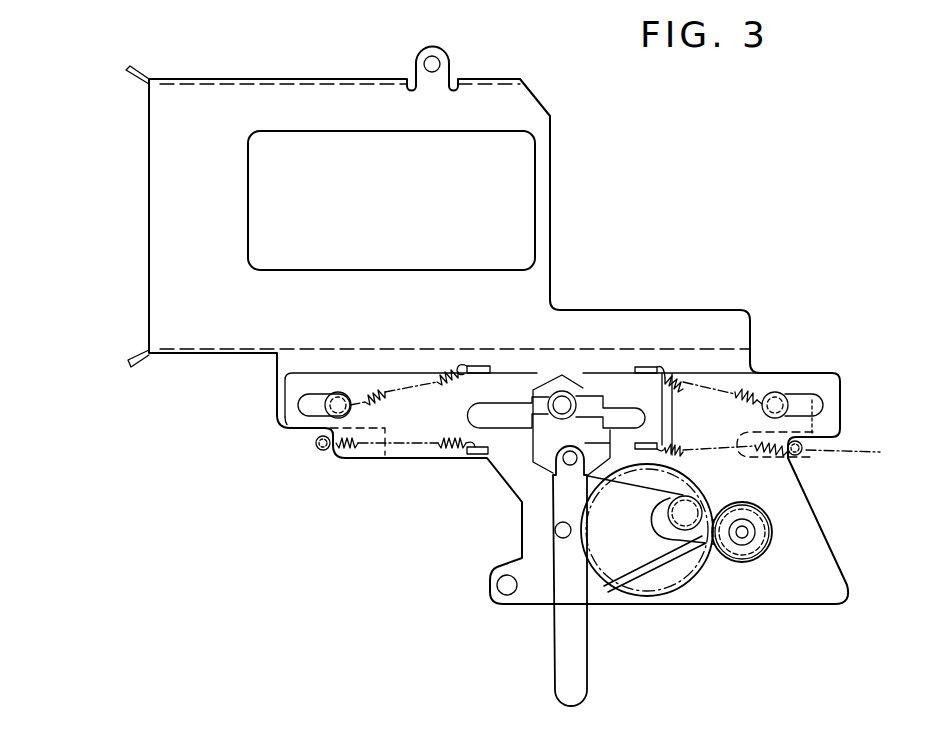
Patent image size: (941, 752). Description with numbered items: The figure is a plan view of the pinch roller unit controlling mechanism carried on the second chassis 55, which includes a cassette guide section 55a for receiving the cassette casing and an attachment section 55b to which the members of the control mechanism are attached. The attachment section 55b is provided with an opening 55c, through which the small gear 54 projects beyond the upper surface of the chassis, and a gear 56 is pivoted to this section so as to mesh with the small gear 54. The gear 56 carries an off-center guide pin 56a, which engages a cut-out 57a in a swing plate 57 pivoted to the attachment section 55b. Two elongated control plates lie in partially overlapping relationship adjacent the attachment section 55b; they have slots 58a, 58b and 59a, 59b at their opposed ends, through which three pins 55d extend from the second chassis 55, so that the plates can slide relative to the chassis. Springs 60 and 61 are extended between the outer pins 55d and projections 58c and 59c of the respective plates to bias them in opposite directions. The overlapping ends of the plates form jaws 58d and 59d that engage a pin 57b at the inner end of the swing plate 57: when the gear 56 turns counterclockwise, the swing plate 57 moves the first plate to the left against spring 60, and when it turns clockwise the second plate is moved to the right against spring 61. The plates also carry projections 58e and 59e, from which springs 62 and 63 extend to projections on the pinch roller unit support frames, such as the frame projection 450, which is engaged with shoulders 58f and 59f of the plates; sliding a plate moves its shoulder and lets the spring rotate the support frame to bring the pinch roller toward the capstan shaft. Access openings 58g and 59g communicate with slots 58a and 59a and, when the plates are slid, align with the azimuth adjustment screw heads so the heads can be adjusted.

The small gear 54 is at (753, 548).
The second chassis 55 is at (548, 232).
The cassette guide section 55a is at (305, 95).
The attachment section 55b is at (535, 595).
The opening 55c is at (775, 528).
The pins 55d is at (338, 395).
The gear 56 is at (685, 578).
The guide pin 56a is at (690, 532).
The swing plate 57 is at (563, 638).
The cut-out 57a is at (660, 560).
The pin 57b is at (555, 532).
The slot 58a is at (590, 393).
The slot 58b is at (822, 405).
The projection 58c is at (648, 367).
The jaw 58d is at (553, 473).
The projection 58e is at (662, 449).
The shoulder 58f is at (802, 447).
The access opening 58g is at (633, 407).
The slot 59a is at (577, 480).
The slot 59b is at (300, 405).
The projection 59c is at (480, 367).
The jaw 59d is at (598, 452).
The projection 59e is at (478, 455).
The shoulder 59f is at (322, 450).
The access opening 59g is at (470, 415).
The spring 60 is at (745, 392).
The spring 61 is at (372, 395).
The spring 62 is at (790, 460).
The spring 63 is at (345, 450).
The frame projection 450 is at (859, 452).